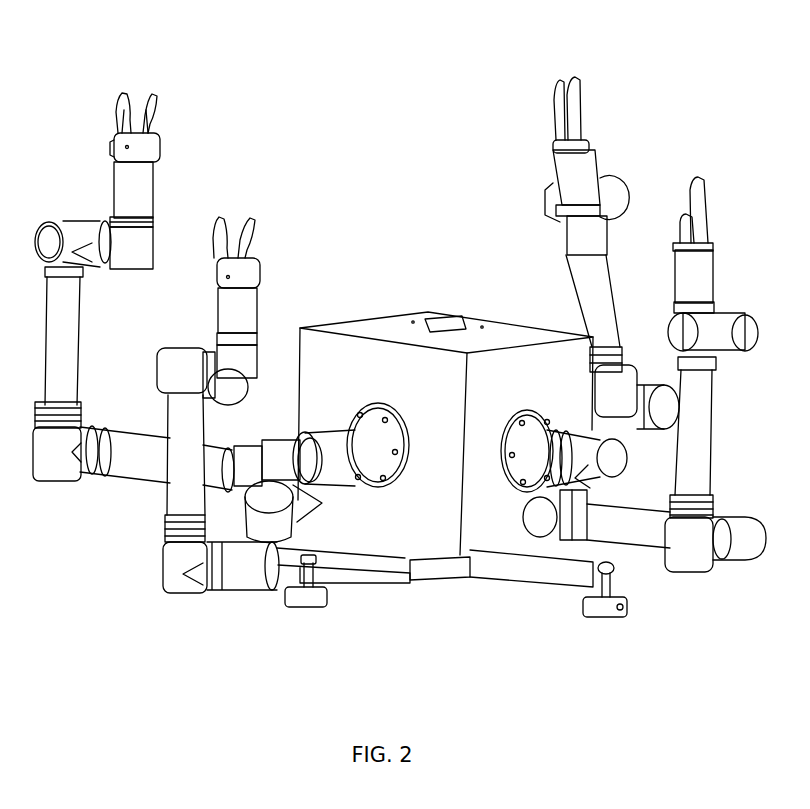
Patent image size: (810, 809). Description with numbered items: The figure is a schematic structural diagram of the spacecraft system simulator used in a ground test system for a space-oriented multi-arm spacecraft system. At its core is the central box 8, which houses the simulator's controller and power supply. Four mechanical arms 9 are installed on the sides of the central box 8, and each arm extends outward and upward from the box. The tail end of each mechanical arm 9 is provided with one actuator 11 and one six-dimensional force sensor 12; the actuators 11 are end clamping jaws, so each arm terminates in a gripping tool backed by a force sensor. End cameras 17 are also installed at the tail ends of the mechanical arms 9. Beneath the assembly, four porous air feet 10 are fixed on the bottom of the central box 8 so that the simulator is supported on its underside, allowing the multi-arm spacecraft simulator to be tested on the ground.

The central box 8 is at (385, 372).
The mechanical arm 9 is at (690, 467).
The porous air foot 10 is at (603, 610).
The actuator 11 is at (694, 202).
The six-dimensional force sensor 12 is at (706, 318).
The end camera 17 is at (710, 215).